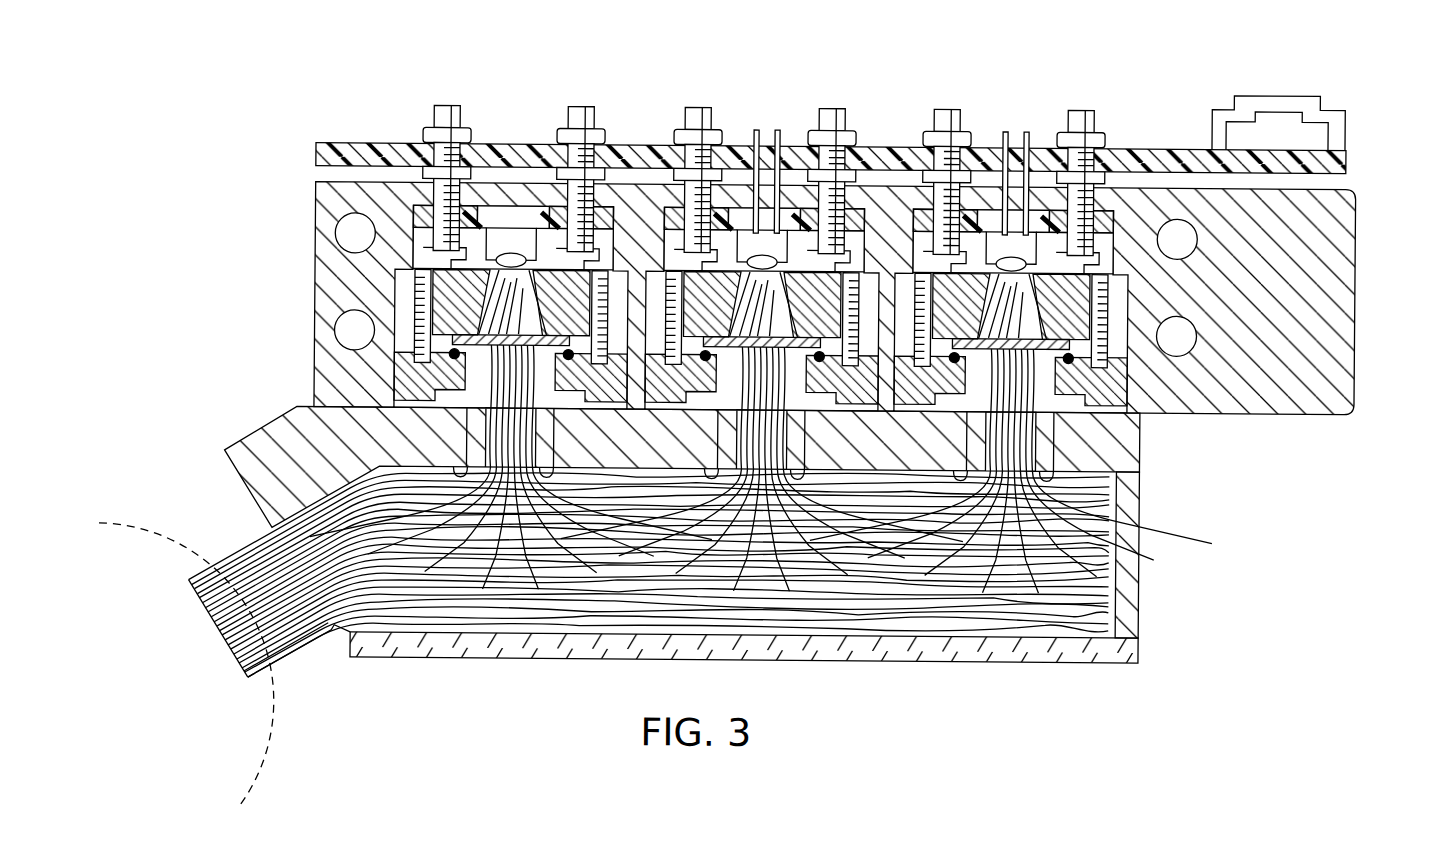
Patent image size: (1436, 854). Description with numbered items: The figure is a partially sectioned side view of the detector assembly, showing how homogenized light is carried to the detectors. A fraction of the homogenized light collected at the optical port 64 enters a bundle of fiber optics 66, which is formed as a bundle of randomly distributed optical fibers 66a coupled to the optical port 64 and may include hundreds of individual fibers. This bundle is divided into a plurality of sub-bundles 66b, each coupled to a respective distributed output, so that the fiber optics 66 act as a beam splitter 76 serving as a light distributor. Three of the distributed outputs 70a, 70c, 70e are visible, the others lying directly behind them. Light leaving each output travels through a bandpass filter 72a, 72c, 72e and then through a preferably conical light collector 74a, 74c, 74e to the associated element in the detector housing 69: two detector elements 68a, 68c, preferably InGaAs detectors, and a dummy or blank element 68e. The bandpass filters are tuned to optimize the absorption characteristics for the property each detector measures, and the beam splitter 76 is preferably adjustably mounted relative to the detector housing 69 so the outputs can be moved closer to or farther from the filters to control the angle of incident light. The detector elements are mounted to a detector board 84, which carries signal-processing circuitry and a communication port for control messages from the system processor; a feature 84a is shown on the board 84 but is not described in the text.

The optical port 64 is at (208, 640).
The fiber optics 66 is at (595, 606).
The bundle of randomly distributed optical fibers 66a is at (283, 668).
The sub-bundles 66b is at (503, 437).
The detector element 68a is at (1015, 118).
The detector element 68c is at (770, 118).
The blank element 68e is at (515, 128).
The detector housing 69 is at (1356, 299).
The distributed output 70a is at (1047, 436).
The distributed output 70c is at (790, 441).
The distributed output 70e is at (550, 441).
The bandpass filter 72a is at (1030, 326).
The bandpass filter 72c is at (782, 328).
The bandpass filter 72e is at (536, 330).
The light collector 74a is at (1025, 297).
The light collector 74c is at (773, 299).
The light collector 74e is at (527, 297).
The beam splitter 76 is at (912, 661).
The detector board 84 is at (1135, 146).
The connector 84a is at (1327, 88).